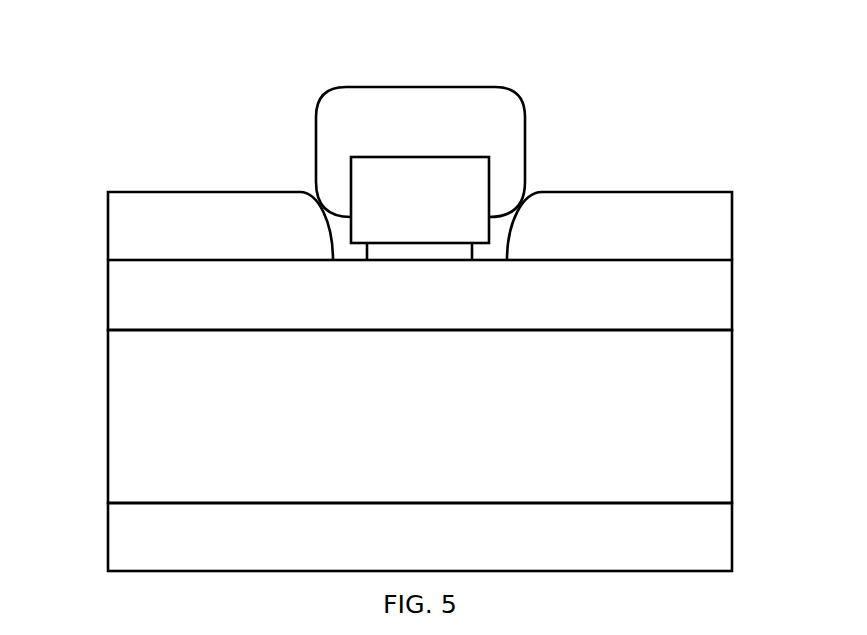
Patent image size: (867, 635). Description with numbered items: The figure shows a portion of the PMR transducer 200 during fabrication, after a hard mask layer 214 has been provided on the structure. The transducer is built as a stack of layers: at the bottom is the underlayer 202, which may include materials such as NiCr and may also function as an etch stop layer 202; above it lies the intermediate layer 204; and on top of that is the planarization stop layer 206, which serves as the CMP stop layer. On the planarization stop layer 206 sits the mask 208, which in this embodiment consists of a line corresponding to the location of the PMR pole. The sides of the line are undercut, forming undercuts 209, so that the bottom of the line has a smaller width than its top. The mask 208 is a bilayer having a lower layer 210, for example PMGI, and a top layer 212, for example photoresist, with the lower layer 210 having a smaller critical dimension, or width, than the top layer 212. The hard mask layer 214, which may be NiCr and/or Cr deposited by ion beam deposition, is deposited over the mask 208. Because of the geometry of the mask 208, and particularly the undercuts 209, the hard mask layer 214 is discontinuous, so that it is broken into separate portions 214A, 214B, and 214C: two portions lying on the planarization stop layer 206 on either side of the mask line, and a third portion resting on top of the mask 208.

The PMR transducer 200 is at (442, 44).
The underlayer 202 is at (732, 540).
The intermediate layer 204 is at (732, 423).
The planarization stop layer 206 is at (108, 317).
The mask 208 is at (622, 181).
The undercuts 209 is at (340, 251).
The lower layer 210 is at (463, 243).
The top layer 212 is at (351, 217).
The hard mask layer 214 is at (756, 172).
The hard mask layer portion 214A is at (732, 237).
The hard mask layer portion 214B is at (215, 192).
The hard mask layer portion 214C is at (472, 87).